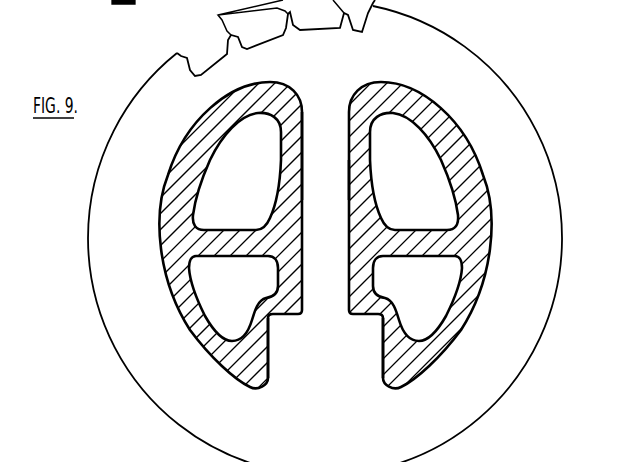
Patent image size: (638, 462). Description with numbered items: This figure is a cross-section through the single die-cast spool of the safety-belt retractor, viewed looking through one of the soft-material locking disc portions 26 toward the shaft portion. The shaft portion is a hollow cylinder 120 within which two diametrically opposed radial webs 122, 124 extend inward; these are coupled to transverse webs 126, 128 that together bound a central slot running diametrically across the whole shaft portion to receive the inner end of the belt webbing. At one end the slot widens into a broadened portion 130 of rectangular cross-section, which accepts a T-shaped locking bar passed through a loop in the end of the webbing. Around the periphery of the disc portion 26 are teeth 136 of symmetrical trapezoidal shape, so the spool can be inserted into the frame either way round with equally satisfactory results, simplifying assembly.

The disc portion 26 is at (466, 38).
The teeth 136 is at (218, 15).
The hollow cylinder 120 is at (180, 172).
The radial web 122 is at (237, 241).
The radial web 124 is at (431, 232).
The transverse web 126 is at (303, 133).
The transverse web 128 is at (311, 172).
The broadened portion 130 is at (352, 351).